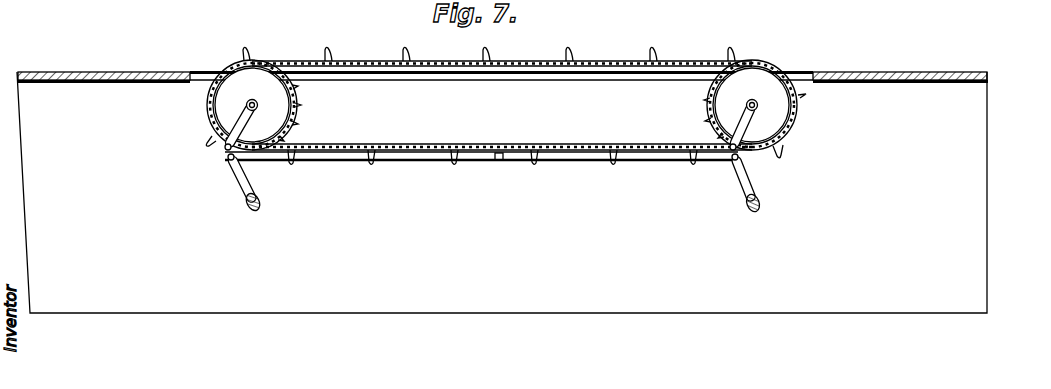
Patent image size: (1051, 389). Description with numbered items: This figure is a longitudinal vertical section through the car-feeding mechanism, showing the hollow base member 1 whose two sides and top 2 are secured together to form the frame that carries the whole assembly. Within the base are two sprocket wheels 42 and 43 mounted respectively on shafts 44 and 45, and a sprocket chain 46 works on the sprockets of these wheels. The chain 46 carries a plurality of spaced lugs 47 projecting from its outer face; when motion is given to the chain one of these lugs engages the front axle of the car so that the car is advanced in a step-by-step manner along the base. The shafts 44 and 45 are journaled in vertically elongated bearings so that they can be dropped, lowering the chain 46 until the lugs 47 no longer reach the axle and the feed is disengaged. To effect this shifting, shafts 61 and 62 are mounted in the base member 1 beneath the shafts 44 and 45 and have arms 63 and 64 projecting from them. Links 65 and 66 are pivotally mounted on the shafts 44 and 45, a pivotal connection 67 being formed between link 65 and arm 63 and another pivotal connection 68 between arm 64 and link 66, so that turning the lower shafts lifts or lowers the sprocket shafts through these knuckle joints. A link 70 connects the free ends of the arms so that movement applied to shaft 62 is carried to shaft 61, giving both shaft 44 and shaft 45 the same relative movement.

The base member 1 is at (664, 304).
The top 2 is at (116, 77).
The sprocket wheel 42 is at (718, 108).
The sprocket wheel 43 is at (223, 98).
The shaft 44 is at (758, 108).
The shaft 45 is at (258, 108).
The sprocket chain 46 is at (602, 61).
The lugs 47 is at (730, 55).
The shaft 61 is at (761, 199).
The shaft 62 is at (262, 200).
The arm 63 is at (737, 172).
The arm 64 is at (243, 193).
The link 65 is at (742, 127).
The link 66 is at (222, 138).
The pivotal connection 67 is at (740, 153).
The pivotal connection 68 is at (229, 159).
The links 70 is at (505, 162).